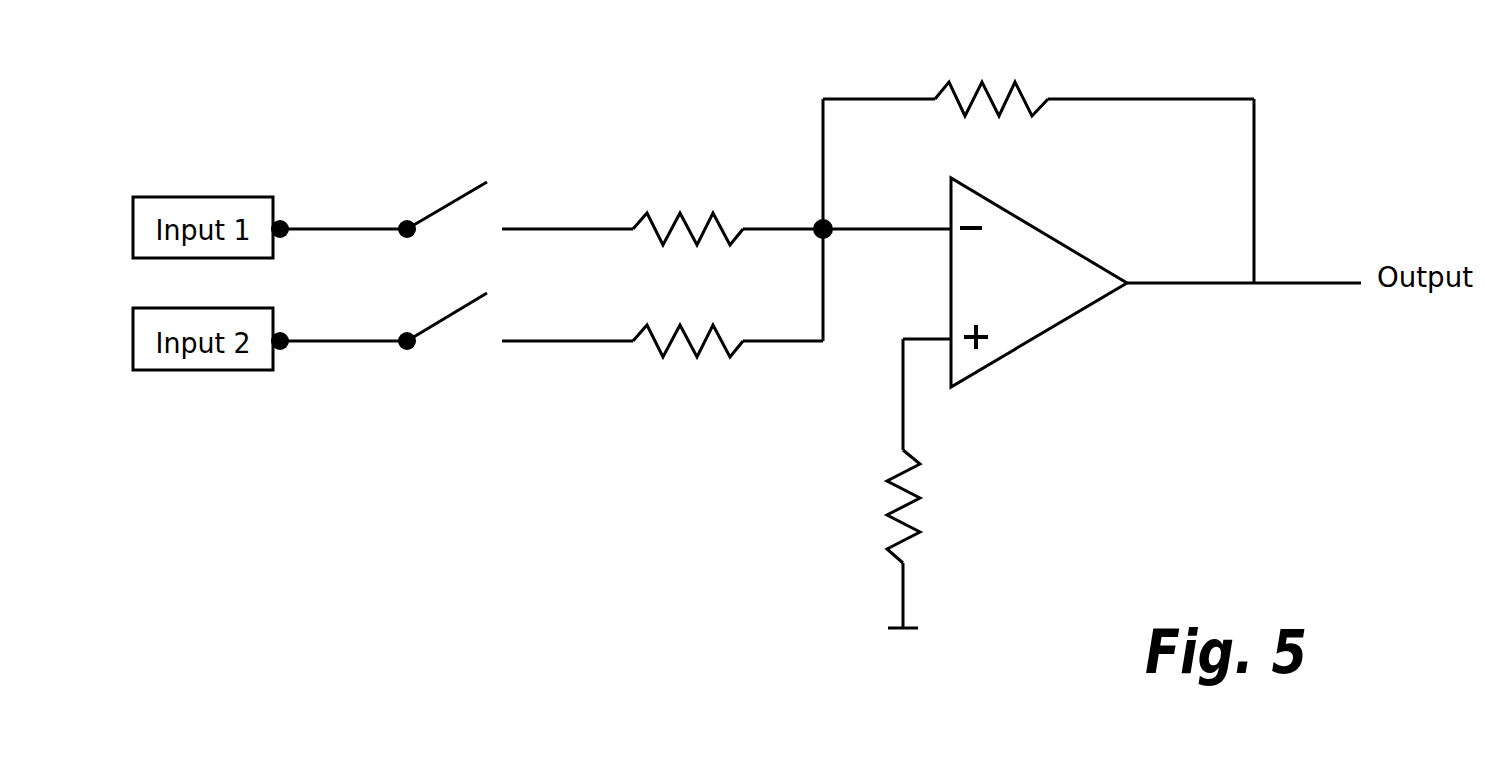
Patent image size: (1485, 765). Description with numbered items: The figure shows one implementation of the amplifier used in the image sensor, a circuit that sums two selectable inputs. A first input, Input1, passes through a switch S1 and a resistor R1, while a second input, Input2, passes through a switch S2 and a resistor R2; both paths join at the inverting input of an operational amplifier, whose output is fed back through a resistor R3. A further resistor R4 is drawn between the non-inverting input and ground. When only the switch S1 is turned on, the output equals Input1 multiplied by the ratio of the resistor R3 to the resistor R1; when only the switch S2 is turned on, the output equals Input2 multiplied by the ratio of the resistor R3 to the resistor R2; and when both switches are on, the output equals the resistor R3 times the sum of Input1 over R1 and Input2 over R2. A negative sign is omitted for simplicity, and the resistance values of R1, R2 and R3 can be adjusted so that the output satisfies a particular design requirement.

The switch S1 is at (442, 197).
The switch S2 is at (442, 309).
The resistor R1 is at (688, 207).
The resistor R2 is at (688, 321).
The resistor R3 is at (991, 78).
The resistor R4 (non-inverting input to ground) R4 is at (932, 506).